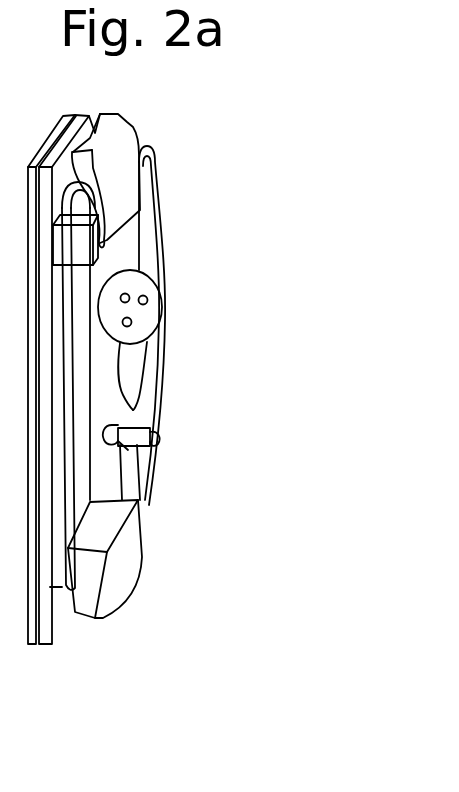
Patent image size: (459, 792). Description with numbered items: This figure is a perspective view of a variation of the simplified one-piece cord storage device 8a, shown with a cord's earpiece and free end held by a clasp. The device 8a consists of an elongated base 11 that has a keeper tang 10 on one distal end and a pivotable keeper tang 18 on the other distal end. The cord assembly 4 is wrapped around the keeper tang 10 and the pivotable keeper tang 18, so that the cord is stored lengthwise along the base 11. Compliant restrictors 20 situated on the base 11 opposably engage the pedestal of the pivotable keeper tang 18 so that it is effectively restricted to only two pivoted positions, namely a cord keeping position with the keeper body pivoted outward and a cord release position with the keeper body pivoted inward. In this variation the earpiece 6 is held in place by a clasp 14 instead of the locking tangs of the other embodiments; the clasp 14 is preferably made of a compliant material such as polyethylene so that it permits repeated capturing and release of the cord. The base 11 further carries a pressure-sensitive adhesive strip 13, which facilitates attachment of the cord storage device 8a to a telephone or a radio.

The cord assembly 4 is at (162, 238).
The earpiece 6 is at (152, 310).
The cord storage device 8a is at (236, 539).
The keeper tang 10 is at (122, 570).
The elongated base 11 is at (80, 481).
The pressure-sensitive adhesive strip 13 is at (28, 650).
The clasp 14 is at (139, 431).
The pivotable keeper tang 18 is at (117, 163).
The compliant restrictors 20 is at (80, 251).